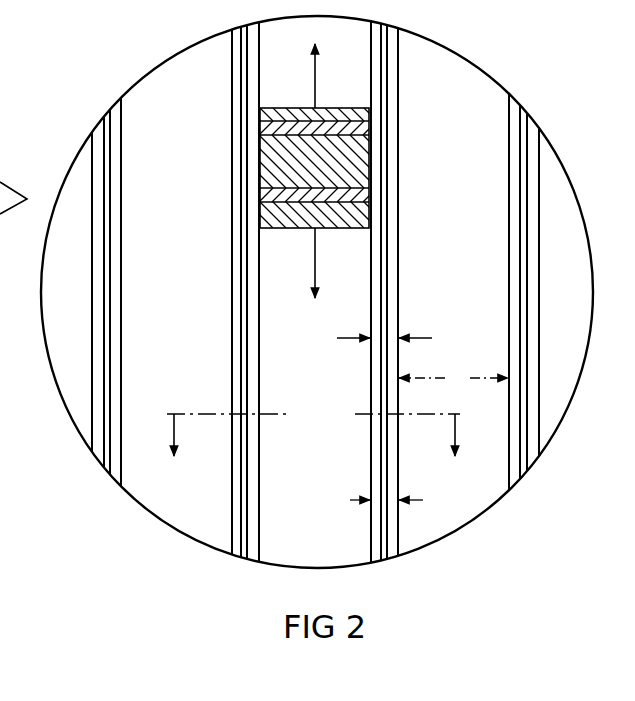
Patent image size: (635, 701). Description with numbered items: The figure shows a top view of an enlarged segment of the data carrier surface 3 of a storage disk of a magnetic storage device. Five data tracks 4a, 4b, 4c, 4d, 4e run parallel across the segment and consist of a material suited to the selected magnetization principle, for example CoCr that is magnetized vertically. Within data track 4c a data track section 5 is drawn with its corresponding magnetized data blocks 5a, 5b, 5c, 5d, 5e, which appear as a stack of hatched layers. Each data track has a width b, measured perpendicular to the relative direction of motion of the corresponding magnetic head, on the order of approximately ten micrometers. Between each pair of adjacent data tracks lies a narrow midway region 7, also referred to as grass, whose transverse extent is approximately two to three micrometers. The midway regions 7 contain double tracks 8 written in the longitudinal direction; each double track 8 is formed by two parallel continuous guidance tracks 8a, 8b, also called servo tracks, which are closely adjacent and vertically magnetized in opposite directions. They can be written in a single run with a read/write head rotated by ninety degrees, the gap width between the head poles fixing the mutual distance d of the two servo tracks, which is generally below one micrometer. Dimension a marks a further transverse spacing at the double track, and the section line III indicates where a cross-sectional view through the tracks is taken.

The data carrier surface 3 is at (458, 70).
The data track 4a is at (57, 315).
The data track 4b is at (174, 282).
The data track 4c is at (315, 366).
The data track 4d is at (459, 272).
The data track 4e is at (558, 197).
The data track section 5 is at (313, 164).
The magnetized data block 5a is at (366, 113).
The magnetized data block 5b is at (366, 130).
The magnetized data block 5c is at (362, 159).
The magnetized data block 5d is at (364, 196).
The magnetized data block 5e is at (362, 218).
The midway region 7 is at (372, 285).
The double track 8 is at (332, 291).
The guidance track 8a is at (380, 530).
The guidance track 8b is at (389, 530).
The dimension a is at (384, 338).
The width b is at (453, 378).
The distance d is at (384, 499).
The section line III is at (312, 435).